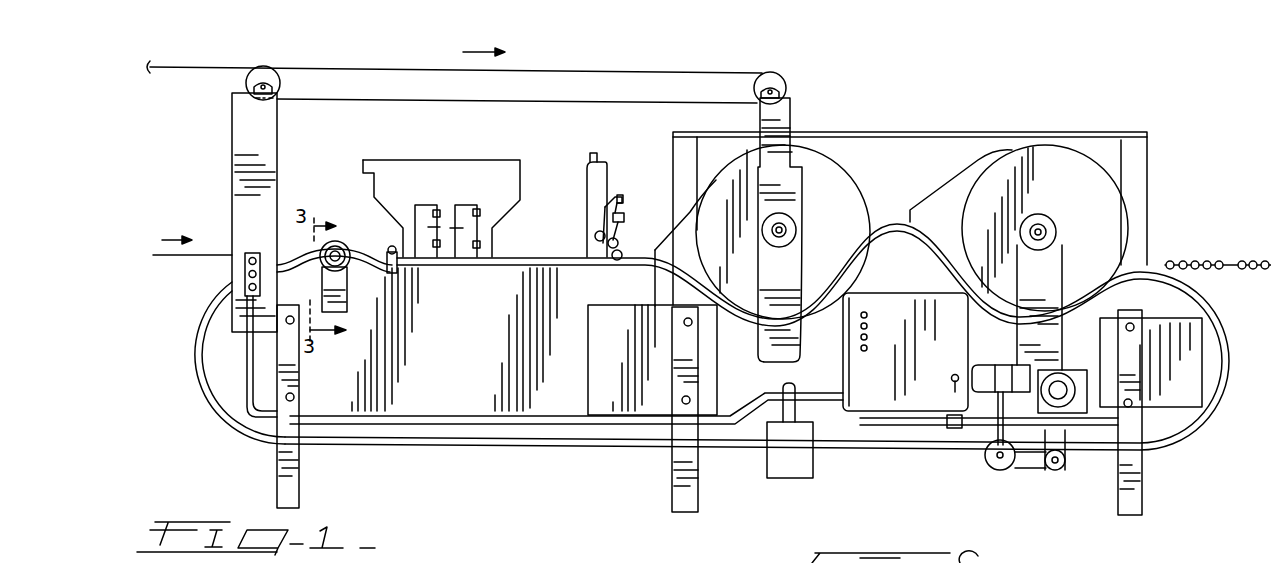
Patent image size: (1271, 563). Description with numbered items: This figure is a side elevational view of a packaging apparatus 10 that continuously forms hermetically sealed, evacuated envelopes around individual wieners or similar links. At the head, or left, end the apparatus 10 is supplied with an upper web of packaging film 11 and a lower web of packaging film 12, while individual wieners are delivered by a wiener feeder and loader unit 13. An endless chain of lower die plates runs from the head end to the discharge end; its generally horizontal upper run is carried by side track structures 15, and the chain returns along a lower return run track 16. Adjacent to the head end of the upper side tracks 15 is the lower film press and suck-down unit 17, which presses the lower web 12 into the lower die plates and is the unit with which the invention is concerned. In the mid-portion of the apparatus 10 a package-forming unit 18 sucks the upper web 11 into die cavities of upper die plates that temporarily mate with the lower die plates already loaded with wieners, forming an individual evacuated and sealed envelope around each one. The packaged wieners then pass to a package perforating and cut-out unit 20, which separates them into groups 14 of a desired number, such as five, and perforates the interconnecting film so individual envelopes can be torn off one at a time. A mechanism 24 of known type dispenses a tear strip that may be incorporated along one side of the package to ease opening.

The packaging apparatus 10 is at (838, 104).
The upper web of packaging film 11 is at (188, 56).
The lower web of packaging film 12 is at (178, 258).
The wiener feeder and loader unit 13 is at (455, 151).
The groups of packaged wieners 14 is at (1252, 262).
The upper side track structures 15 is at (566, 257).
The lower return run track 16 is at (900, 447).
The lower film press and suck-down unit 17 is at (340, 232).
The package-forming unit 18 is at (866, 185).
The package perforating and cut-out unit 20 is at (1085, 152).
The tear strip dispensing mechanism 24 is at (621, 190).